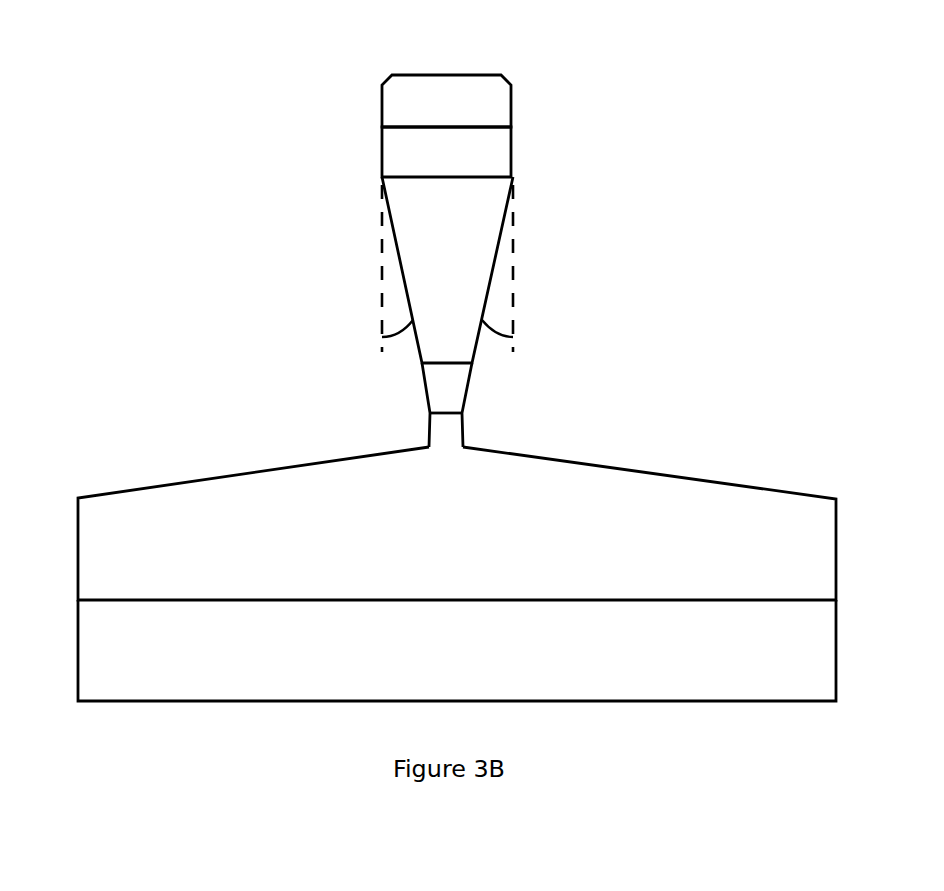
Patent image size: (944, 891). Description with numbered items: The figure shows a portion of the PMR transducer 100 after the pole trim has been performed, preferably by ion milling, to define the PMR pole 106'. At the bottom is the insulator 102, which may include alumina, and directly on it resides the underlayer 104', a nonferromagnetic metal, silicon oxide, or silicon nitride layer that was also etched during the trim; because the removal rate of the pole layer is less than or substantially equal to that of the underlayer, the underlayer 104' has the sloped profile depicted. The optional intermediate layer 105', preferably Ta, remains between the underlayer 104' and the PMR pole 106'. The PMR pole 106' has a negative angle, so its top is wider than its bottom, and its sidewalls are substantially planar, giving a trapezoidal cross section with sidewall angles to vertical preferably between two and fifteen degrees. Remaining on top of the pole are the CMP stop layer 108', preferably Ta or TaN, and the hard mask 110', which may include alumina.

The PMR transducer 100 is at (472, 37).
The insulator 102 is at (836, 648).
The underlayer 104' is at (429, 523).
The intermediate layer 105' is at (393, 405).
The PMR pole 106' is at (487, 261).
The CMP stop layer 108' is at (417, 137).
The hard mask 110' is at (479, 97).